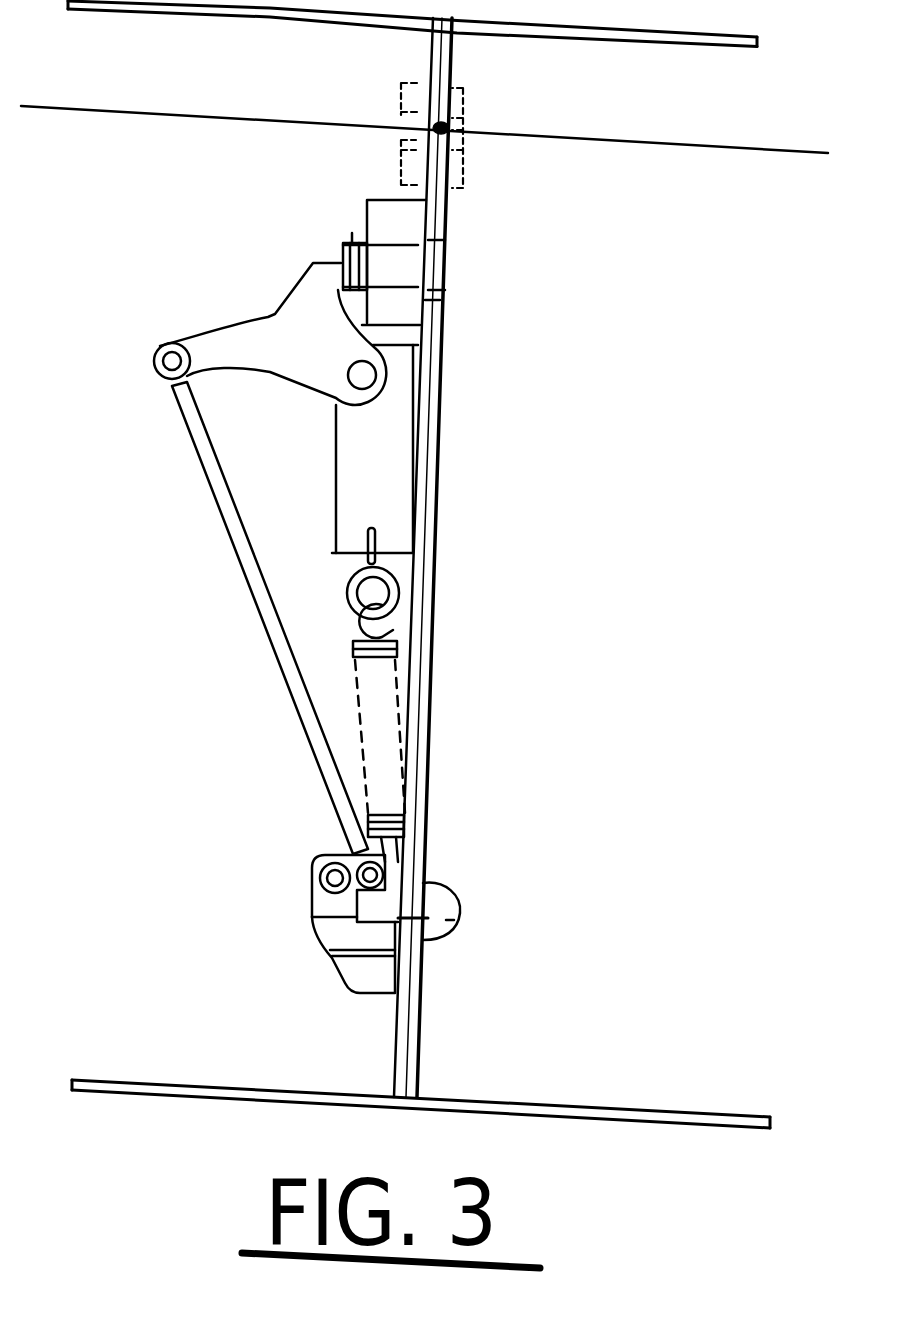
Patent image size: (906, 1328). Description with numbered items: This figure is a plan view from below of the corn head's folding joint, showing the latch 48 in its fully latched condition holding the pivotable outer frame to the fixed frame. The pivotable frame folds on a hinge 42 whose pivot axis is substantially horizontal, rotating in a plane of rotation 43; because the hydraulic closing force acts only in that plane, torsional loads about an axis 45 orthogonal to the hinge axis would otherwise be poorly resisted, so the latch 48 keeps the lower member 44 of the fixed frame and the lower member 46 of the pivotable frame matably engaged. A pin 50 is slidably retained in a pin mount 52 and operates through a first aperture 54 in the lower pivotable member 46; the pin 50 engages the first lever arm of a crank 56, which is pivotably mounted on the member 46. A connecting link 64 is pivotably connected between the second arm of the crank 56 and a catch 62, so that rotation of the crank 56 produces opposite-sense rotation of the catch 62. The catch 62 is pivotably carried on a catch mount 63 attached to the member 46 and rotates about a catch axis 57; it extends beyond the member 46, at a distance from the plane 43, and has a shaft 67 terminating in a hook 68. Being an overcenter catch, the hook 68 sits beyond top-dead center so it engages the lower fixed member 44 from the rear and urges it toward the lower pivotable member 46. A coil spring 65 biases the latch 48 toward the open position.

The hinge 42 is at (460, 93).
The plane of rotation 43 is at (682, 145).
The lower member of fixed frame 44 is at (457, 62).
The axis 45 is at (451, 134).
The lower member of pivotable frame 46 is at (434, 62).
The latch 48 is at (177, 312).
The pin 50 is at (435, 382).
The pin mount 52 is at (270, 285).
The first aperture 54 is at (433, 292).
The crank 56 is at (267, 350).
The catch axis 57 is at (321, 858).
The catch 62 is at (387, 900).
The catch mount 63 is at (330, 930).
The connecting link 64 is at (259, 615).
The coil spring 65 is at (397, 640).
The shaft 67 is at (450, 883).
The hook 68 is at (460, 932).